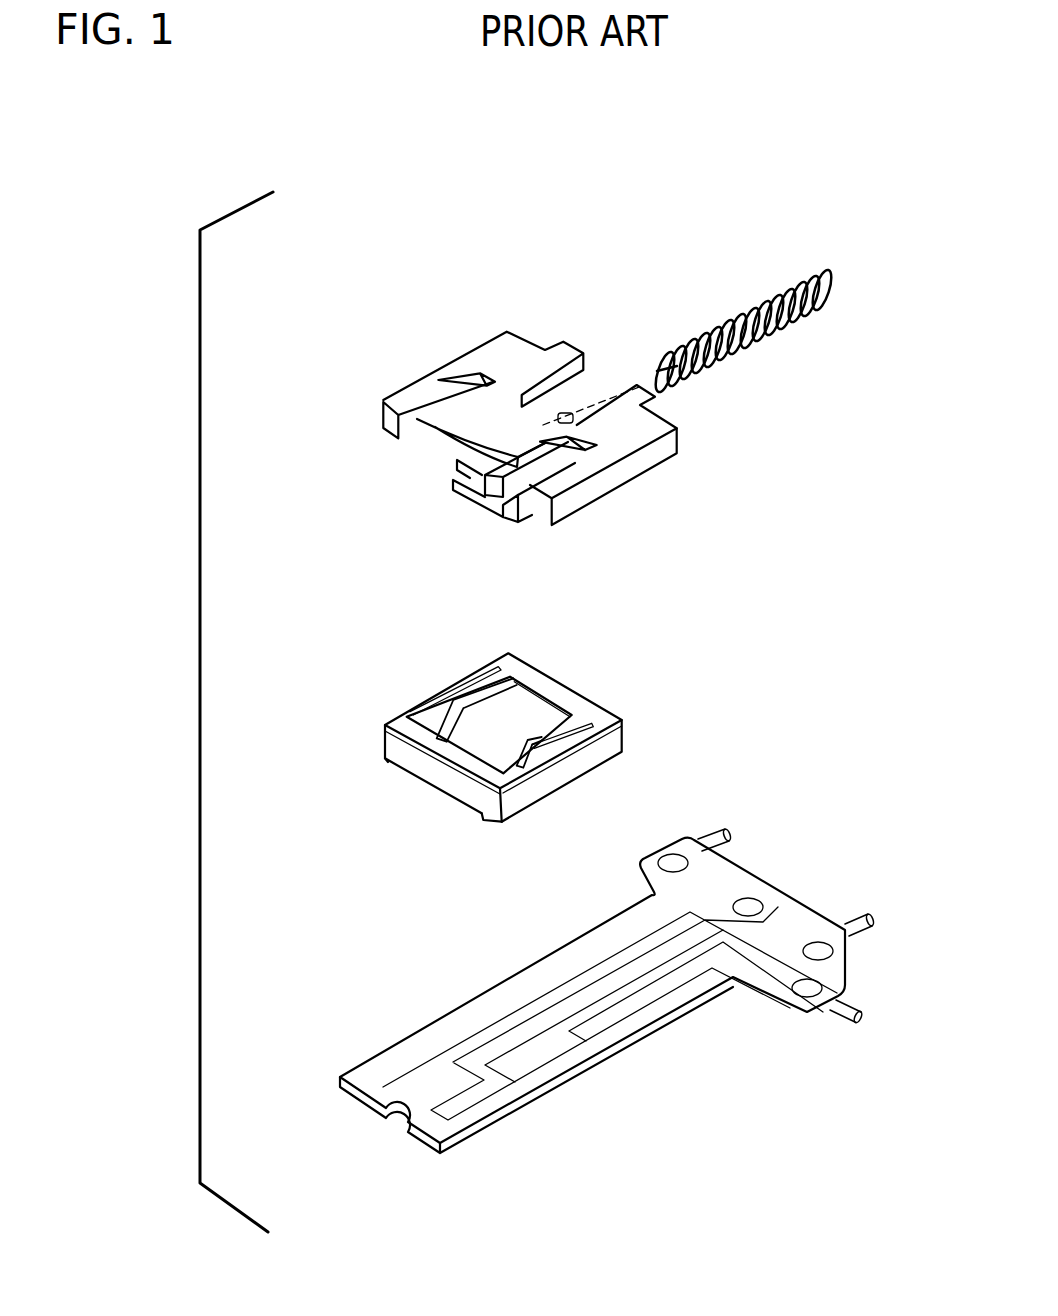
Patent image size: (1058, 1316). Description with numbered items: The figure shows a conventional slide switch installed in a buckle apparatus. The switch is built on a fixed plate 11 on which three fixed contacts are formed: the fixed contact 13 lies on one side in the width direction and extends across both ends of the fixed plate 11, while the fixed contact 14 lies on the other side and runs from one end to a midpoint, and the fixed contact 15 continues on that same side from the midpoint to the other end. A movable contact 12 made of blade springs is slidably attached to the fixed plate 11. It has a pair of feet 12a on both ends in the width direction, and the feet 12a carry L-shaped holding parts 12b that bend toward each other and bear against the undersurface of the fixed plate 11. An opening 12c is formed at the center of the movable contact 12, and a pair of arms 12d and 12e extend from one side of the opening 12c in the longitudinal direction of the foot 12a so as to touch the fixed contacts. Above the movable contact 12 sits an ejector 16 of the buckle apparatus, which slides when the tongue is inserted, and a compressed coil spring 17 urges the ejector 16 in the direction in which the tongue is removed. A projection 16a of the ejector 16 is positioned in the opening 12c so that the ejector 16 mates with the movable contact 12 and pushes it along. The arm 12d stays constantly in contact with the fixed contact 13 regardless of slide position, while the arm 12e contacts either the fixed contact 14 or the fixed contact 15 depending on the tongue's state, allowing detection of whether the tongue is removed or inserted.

The fixed plate 11 is at (776, 900).
The movable contact 12 is at (484, 753).
The feet 12a is at (383, 741).
The holding parts 12b is at (385, 763).
The opening 12c is at (548, 697).
The arm 12d is at (447, 717).
The arm 12e is at (527, 766).
The fixed contact 13 is at (607, 993).
The fixed contact 14 is at (643, 1010).
The fixed contact 15 is at (468, 1113).
The ejector 16 is at (488, 352).
The projection 16a is at (528, 515).
The compressed coil spring 17 is at (770, 283).